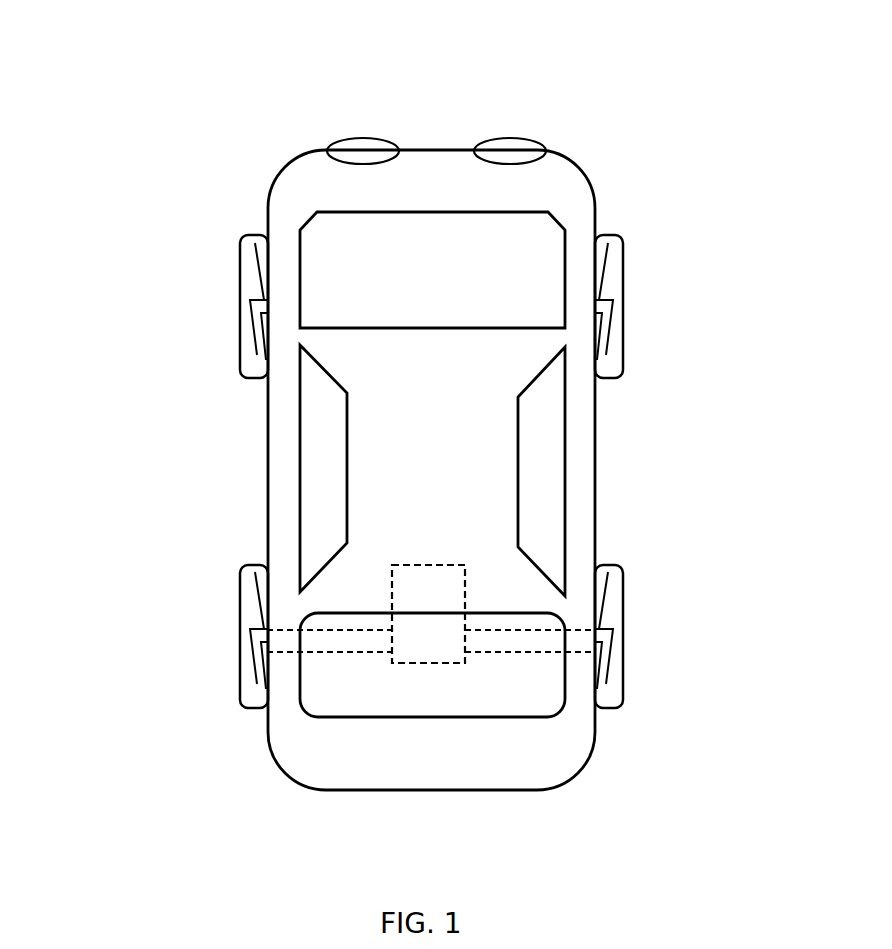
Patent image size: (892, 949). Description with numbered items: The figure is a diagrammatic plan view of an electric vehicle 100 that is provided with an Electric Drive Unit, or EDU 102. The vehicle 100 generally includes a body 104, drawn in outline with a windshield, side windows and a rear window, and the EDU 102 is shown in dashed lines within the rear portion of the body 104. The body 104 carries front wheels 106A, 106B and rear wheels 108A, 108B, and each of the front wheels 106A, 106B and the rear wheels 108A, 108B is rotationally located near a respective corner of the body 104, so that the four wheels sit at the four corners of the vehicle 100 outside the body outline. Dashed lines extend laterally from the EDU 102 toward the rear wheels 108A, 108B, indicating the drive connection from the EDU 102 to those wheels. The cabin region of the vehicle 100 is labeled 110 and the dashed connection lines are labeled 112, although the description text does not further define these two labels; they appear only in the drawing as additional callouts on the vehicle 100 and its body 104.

The electric vehicle 100 is at (628, 146).
The electric drive unit 102 is at (442, 610).
The body 104 is at (578, 402).
The front wheel 106A is at (248, 268).
The front wheel 106B is at (620, 275).
The rear wheel 108A is at (248, 605).
The rear wheel 108B is at (613, 627).
The passenger cabin 110 is at (405, 500).
The communication bus 112 is at (392, 572).